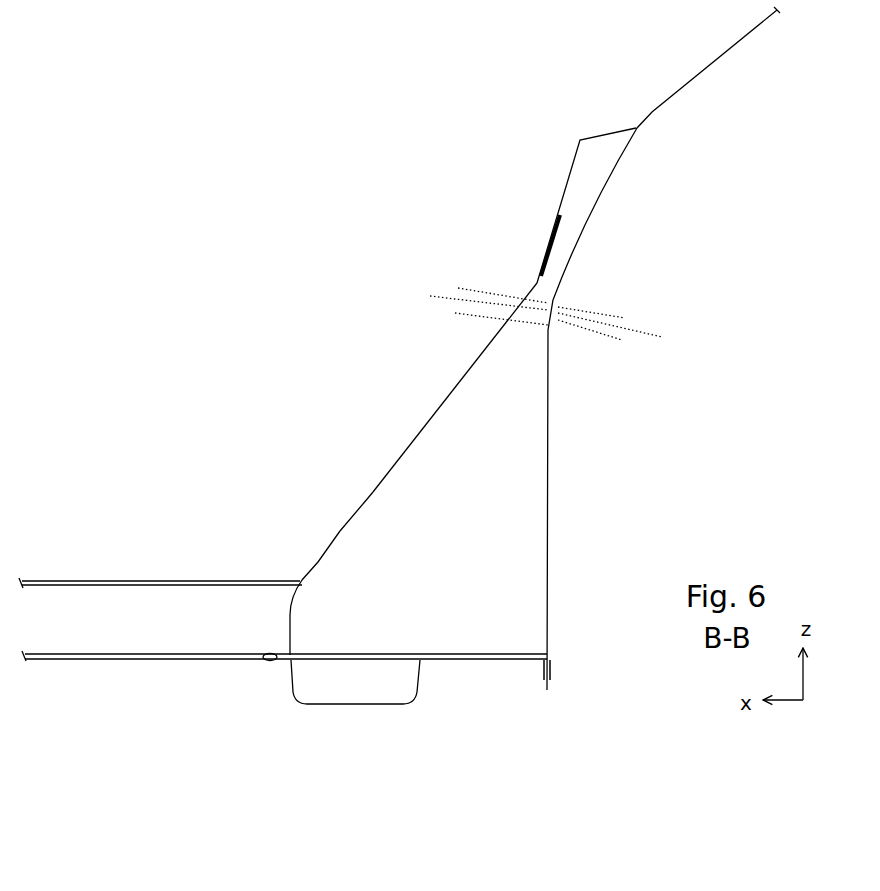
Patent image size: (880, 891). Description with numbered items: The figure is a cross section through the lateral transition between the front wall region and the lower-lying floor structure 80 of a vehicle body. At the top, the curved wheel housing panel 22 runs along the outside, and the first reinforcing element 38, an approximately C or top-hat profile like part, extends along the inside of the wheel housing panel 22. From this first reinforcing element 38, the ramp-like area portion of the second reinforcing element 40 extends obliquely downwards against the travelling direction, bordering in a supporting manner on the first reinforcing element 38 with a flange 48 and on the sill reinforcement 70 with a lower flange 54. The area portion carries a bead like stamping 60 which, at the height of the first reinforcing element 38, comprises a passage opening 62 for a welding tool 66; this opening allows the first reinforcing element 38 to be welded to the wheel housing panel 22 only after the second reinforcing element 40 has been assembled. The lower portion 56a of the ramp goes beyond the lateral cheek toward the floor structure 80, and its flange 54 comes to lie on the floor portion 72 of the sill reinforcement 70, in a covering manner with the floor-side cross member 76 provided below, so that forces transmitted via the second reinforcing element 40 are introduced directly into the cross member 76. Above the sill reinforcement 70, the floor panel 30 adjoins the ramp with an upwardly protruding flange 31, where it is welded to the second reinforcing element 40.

The wheel housing panel 22 is at (700, 70).
The floor panel 30 is at (145, 582).
The flange 31 is at (315, 561).
The first reinforcing element 38 is at (577, 170).
The second reinforcing element 40 is at (384, 338).
The flange 48 is at (555, 222).
The flange 54 is at (268, 654).
The lower portion 56a is at (340, 530).
The bead like stamping 60 is at (392, 472).
The passage opening 62 is at (520, 294).
The welding tool 66 is at (478, 296).
The sill reinforcement 70 is at (105, 686).
The floor portion 72 is at (360, 654).
The floor-side cross member 76 is at (320, 705).
The floor structure 80 is at (401, 789).